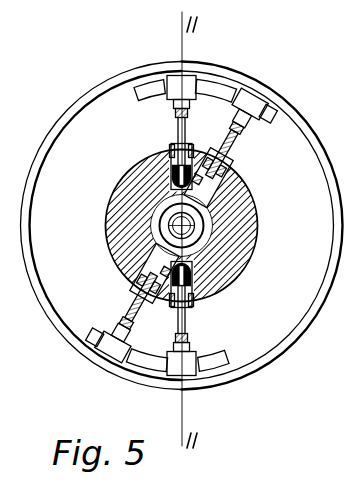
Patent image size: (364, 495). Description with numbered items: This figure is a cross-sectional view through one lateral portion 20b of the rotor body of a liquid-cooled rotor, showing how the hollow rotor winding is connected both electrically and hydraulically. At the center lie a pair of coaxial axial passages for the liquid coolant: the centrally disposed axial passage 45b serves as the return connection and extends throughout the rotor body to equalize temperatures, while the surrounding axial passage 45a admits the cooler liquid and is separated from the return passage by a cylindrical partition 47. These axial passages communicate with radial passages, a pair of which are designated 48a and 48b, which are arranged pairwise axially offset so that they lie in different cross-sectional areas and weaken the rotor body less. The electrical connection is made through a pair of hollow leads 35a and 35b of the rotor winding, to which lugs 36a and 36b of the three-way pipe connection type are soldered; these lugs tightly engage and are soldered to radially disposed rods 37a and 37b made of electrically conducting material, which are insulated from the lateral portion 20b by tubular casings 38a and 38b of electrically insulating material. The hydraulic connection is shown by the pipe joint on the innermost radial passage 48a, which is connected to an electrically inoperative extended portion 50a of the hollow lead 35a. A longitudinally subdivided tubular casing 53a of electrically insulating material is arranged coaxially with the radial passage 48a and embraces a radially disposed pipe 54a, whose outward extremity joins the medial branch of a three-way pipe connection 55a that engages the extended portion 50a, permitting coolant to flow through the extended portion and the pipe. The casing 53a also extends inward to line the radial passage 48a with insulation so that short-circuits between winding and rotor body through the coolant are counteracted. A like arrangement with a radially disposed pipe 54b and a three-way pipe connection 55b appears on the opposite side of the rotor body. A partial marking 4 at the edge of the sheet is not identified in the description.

The lateral portion of the rotor body 20b is at (137, 174).
The hollow lead 35a is at (148, 89).
The hollow lead 35b is at (231, 365).
The lug 36a is at (188, 86).
The lug 36b is at (183, 372).
The radially disposed rod 37a is at (178, 119).
The radially disposed rod 37b is at (190, 334).
The tubular casing 38a is at (173, 147).
The tubular casing 38b is at (191, 314).
The axial passage 45a is at (168, 225).
The axial passage 45b is at (204, 230).
The cylindrical partition 47 is at (166, 213).
The radial passage 48a is at (206, 206).
The radial passage 48b is at (166, 246).
The extended portion of hollow lead 50a is at (218, 93).
The tubular casing 53a is at (232, 160).
The radially disposed pipe 54a is at (232, 135).
The radially disposed pipe 54b is at (125, 318).
The three-way pipe connection 55a is at (256, 108).
The three-way pipe connection 55b is at (107, 351).
The housing (partially visible) 4 is at (357, 348).